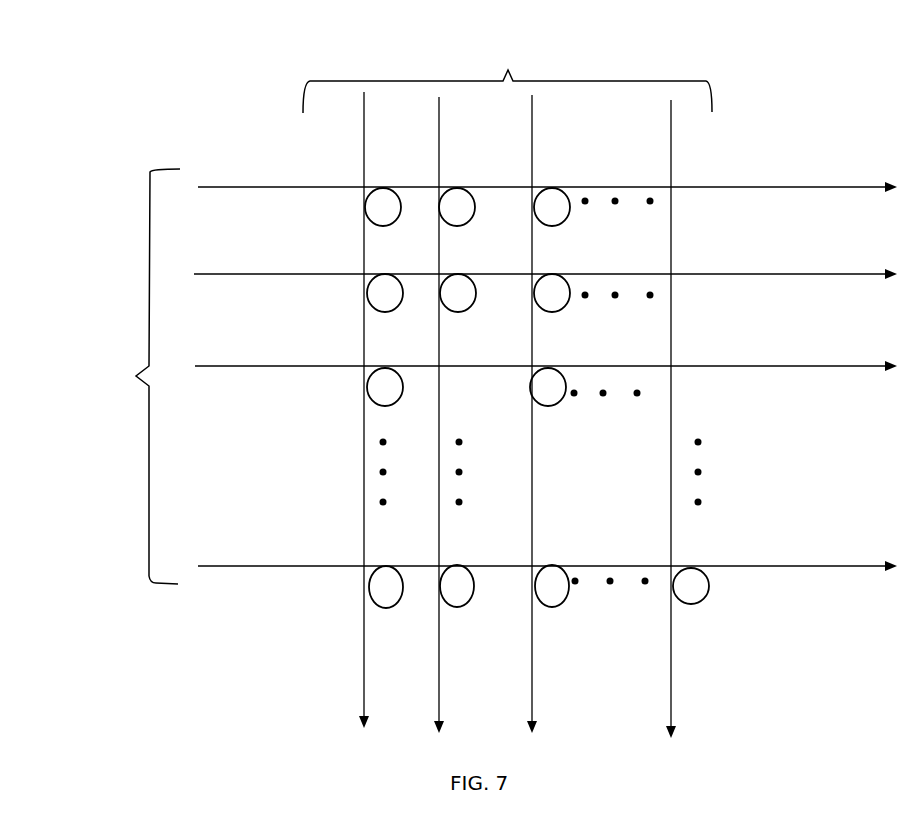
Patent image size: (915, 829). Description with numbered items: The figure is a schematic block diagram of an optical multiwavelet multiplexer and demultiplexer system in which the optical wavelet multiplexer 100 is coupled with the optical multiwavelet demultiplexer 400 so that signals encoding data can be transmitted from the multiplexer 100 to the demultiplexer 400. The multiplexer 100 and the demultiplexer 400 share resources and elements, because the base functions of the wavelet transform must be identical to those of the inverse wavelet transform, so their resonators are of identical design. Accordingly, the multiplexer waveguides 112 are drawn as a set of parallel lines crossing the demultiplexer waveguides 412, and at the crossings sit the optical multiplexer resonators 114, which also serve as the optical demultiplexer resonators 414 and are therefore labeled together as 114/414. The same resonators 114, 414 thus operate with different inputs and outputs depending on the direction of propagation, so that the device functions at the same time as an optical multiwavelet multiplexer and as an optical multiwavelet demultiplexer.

The optical wavelet multiplexer 100 is at (508, 70).
The multiplexer waveguides 112 is at (365, 148).
The optical multiplexer resonators 114 is at (578, 186).
The optical demultiplexer resonators 414 is at (581, 180).
The demultiplexer waveguides 412 is at (60, 139).
The optical multiwavelet demultiplexer 400 is at (136, 376).